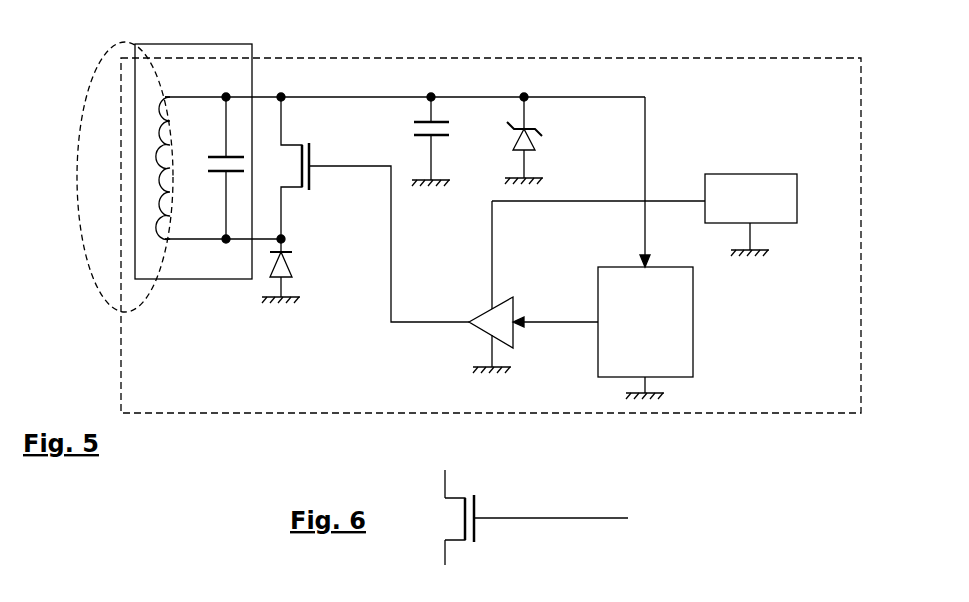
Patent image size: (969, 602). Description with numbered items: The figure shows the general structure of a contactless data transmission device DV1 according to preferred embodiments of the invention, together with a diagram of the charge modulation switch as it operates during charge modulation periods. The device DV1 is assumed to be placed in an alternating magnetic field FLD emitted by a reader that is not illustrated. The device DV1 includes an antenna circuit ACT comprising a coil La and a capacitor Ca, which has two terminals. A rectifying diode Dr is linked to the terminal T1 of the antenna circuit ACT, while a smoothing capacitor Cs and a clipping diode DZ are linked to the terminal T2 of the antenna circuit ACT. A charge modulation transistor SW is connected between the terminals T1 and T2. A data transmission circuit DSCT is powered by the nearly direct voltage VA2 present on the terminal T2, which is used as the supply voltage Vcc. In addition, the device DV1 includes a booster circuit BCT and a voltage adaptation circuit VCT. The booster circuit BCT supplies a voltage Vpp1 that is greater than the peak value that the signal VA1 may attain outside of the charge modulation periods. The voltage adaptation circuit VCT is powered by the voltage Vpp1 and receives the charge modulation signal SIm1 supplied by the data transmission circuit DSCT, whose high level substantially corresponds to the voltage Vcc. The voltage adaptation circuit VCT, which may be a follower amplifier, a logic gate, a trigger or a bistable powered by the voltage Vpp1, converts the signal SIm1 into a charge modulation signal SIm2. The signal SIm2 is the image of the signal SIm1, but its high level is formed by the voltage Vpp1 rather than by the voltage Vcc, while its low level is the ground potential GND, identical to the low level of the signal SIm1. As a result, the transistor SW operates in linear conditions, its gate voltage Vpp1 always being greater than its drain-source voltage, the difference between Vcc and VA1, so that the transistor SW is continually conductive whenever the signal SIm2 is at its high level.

In FIG. 5, the contactless data transmission device DV1 is at (491, 235).
In FIG. 5, the alternating magnetic field FLD is at (95, 283).
In FIG. 5, the antenna circuit ACT is at (252, 88).
In FIG. 5, the coil La is at (160, 242).
In FIG. 5, the nearly direct voltage VA2 is at (405, 86).
In FIG. 5, the signal VA1 is at (223, 227).
In FIG. 6, the signal VA1 is at (445, 563).
In FIG. 5, the terminal T2 is at (227, 95).
In FIG. 5, the terminal T1 is at (226, 243).
In FIG. 5, the capacitor Ca is at (216, 154).
In FIG. 5, the charge modulation transistor SW is at (310, 170).
In FIG. 6, the charge modulation transistor SW is at (462, 515).
In FIG. 5, the rectifying diode Dr is at (295, 268).
In FIG. 5, the ground potential GND is at (330, 288).
In FIG. 5, the smoothing capacitor Cs is at (430, 133).
In FIG. 5, the clipping diode DZ is at (528, 146).
In FIG. 5, the supply voltage Vcc is at (619, 171).
In FIG. 6, the supply voltage Vcc is at (450, 474).
In FIG. 5, the voltage Vpp1 is at (600, 243).
In FIG. 6, the voltage Vpp1 is at (566, 506).
In FIG. 5, the booster circuit BCT is at (751, 215).
In FIG. 5, the data transmission circuit DSCT is at (645, 333).
In FIG. 5, the voltage adaptation circuit VCT is at (485, 336).
In FIG. 5, the charge modulation signal SIm2 is at (391, 244).
In FIG. 6, the charge modulation signal SIm2 is at (574, 518).
In FIG. 5, the charge modulation signal SIm1 is at (555, 312).